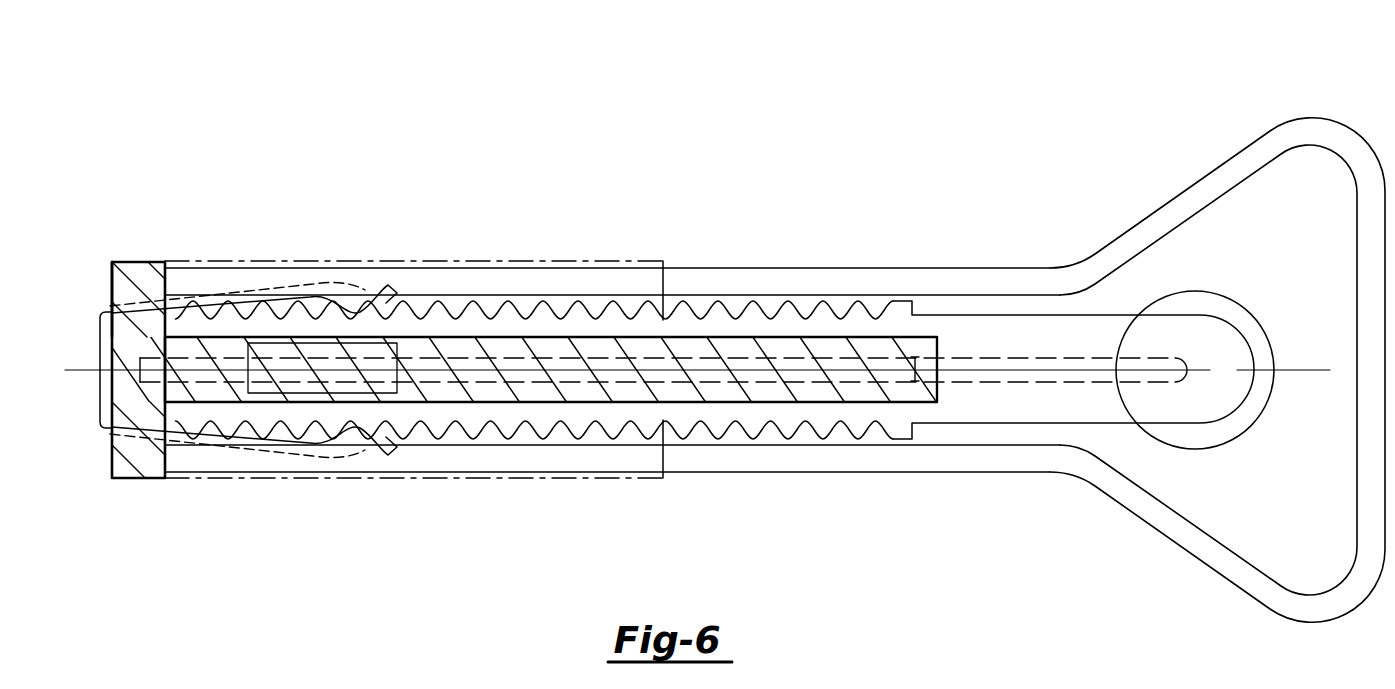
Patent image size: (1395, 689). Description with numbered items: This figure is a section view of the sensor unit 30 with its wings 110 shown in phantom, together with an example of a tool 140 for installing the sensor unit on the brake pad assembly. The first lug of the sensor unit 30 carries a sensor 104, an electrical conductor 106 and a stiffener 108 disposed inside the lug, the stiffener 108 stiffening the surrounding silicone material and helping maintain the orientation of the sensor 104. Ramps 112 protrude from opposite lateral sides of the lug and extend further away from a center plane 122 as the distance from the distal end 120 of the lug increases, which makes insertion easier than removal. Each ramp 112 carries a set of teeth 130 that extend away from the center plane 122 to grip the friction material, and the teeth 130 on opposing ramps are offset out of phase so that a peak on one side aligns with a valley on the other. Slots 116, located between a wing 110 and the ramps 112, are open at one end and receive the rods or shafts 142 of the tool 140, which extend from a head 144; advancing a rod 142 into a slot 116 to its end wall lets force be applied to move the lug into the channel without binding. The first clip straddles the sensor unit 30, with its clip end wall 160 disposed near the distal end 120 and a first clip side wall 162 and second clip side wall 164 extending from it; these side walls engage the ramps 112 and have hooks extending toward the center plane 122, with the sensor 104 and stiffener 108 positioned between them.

The sensor unit 30 is at (83, 425).
The sensor 104 is at (385, 290).
The electrical conductor 106 is at (1033, 383).
The stiffener 108 is at (97, 322).
The wings 110 is at (510, 262).
The ramps 112 is at (163, 305).
The slots 116 is at (632, 287).
The distal end 120 is at (112, 290).
The center plane 122 is at (1287, 367).
The teeth 130 is at (314, 296).
The tool 140 is at (1217, 337).
The rods or shafts 142 is at (792, 268).
The head 144 is at (1278, 126).
The clip end wall 160 is at (100, 391).
The first clip side wall 162 is at (243, 452).
The second clip side wall 164 is at (243, 288).